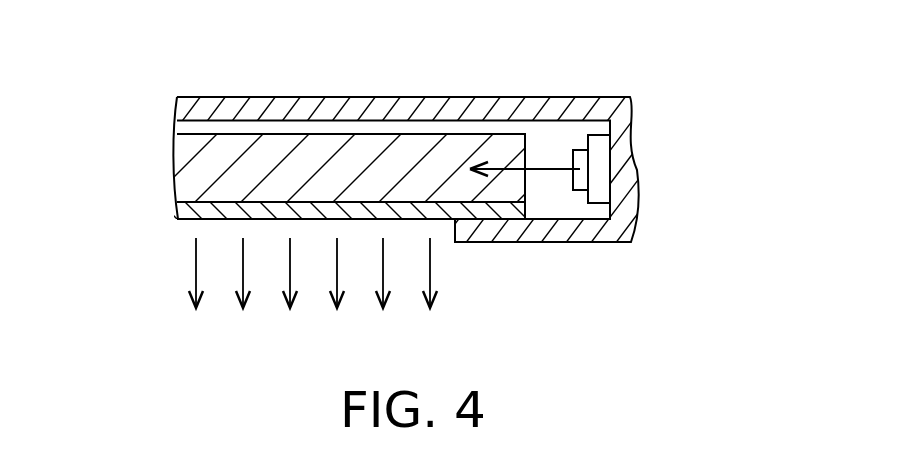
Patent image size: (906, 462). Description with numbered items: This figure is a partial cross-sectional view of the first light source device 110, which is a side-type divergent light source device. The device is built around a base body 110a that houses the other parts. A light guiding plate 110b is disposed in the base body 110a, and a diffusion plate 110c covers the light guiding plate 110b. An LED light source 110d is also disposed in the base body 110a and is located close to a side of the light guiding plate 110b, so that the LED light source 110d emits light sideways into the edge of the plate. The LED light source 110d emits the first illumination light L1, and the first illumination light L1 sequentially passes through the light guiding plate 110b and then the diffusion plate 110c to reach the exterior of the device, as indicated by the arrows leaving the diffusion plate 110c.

The first light source device 110 is at (618, 64).
The base body 110a is at (618, 224).
The light guiding plate 110b is at (341, 168).
The diffusion plate 110c is at (182, 211).
The LED light source 110d is at (582, 165).
The first illumination light L1 is at (548, 168).